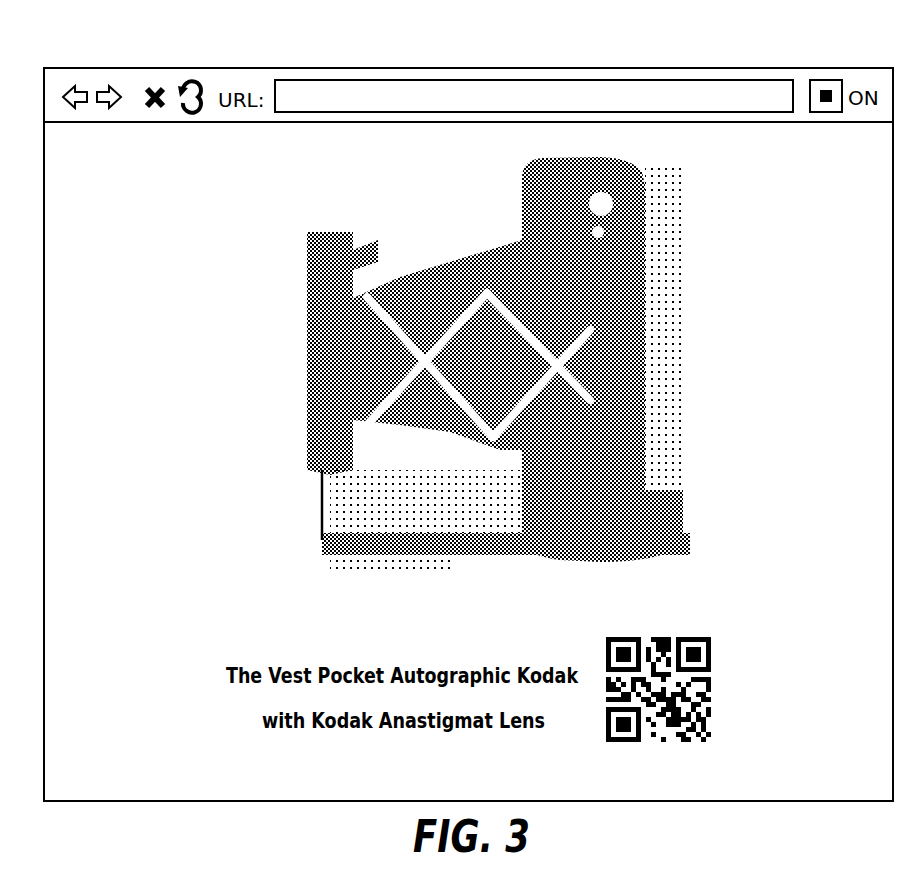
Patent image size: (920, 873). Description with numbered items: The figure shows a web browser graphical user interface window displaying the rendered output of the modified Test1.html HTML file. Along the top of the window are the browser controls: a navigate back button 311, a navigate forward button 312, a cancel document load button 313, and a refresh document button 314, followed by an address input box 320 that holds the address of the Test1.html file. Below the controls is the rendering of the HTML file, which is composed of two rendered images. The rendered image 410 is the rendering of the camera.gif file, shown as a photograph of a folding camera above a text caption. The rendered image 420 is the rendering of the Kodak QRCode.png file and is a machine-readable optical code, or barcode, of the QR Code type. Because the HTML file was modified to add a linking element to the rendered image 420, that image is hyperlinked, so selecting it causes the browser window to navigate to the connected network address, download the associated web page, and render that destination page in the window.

The navigate back button 311 is at (76, 84).
The navigate forward button 312 is at (108, 85).
The cancel document load button 313 is at (151, 85).
The refresh document button 314 is at (190, 85).
The address input box 320 is at (291, 78).
The rendered image 410 is at (645, 297).
The rendered image 420 is at (712, 658).